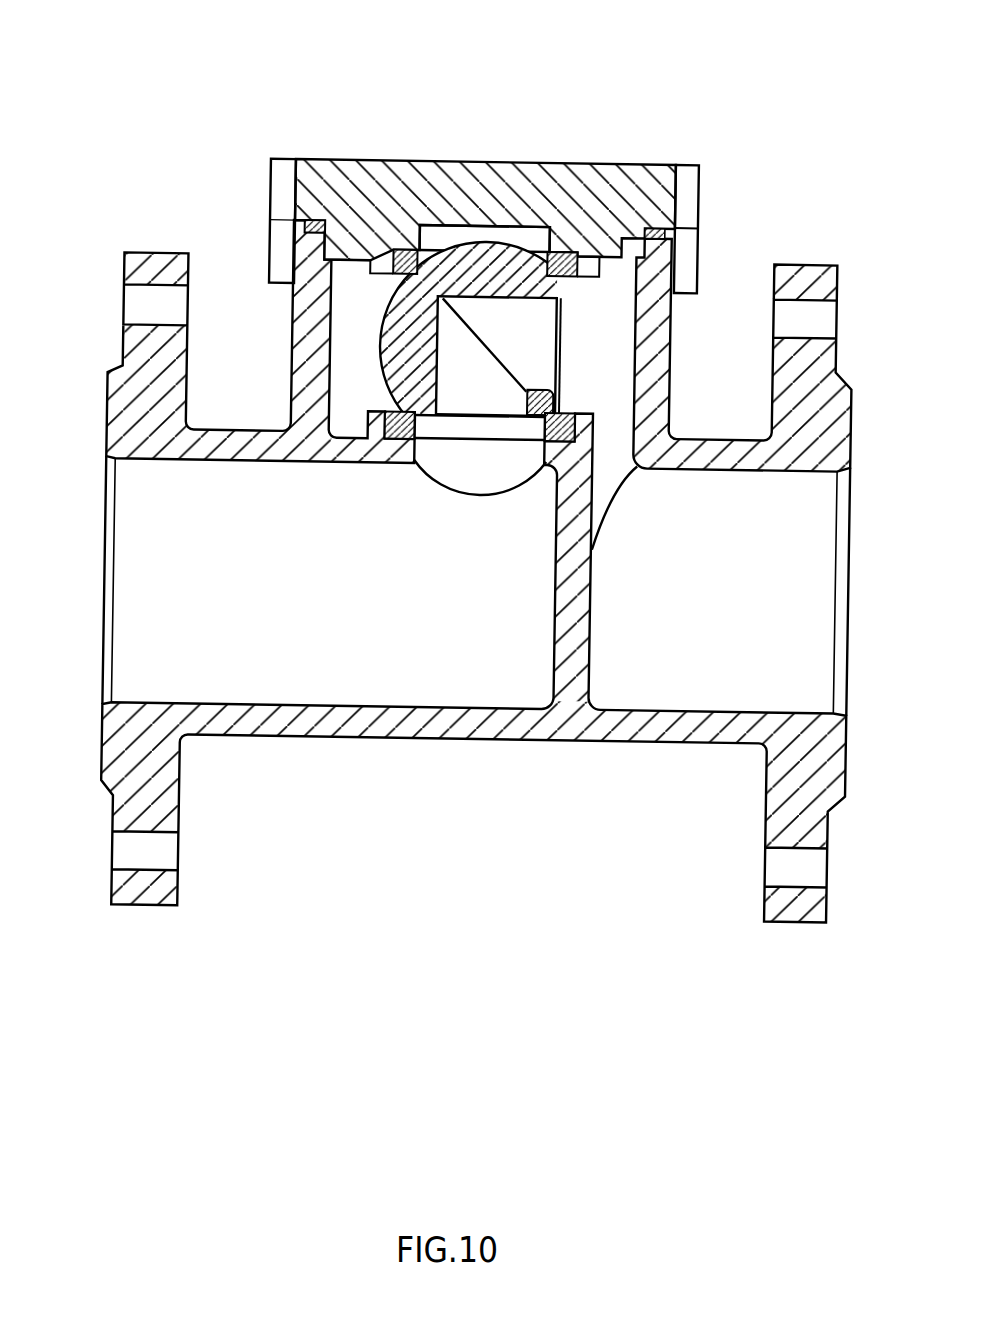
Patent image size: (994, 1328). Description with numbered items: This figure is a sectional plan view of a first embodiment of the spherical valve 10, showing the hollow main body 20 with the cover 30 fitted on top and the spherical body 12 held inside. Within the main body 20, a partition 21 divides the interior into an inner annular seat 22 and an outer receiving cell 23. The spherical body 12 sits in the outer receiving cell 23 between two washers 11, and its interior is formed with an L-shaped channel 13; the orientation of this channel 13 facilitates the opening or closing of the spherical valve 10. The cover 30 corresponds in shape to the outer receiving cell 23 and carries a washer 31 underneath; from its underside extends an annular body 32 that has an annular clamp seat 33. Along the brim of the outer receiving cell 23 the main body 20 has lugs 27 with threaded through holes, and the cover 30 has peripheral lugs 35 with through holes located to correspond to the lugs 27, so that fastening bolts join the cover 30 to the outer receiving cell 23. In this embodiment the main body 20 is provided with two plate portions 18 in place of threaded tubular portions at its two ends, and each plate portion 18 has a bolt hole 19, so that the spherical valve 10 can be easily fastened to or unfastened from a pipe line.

The spherical valve 10 is at (711, 96).
The washers 11 is at (561, 269).
The spherical body 12 is at (496, 253).
The L-shaped channel 13 is at (442, 346).
The plate portions 18 is at (122, 382).
The bolt hole 19 is at (126, 304).
The main body 20 is at (331, 724).
The partition 21 is at (582, 496).
The inner annular seat 22 is at (455, 472).
The outer receiving cell 23 is at (617, 338).
The lugs 27 is at (685, 252).
The cover 30 is at (513, 203).
The washer 31 is at (335, 224).
The annular body 32 is at (346, 242).
The annular clamp seat 33 is at (341, 264).
The lugs 35 is at (684, 180).